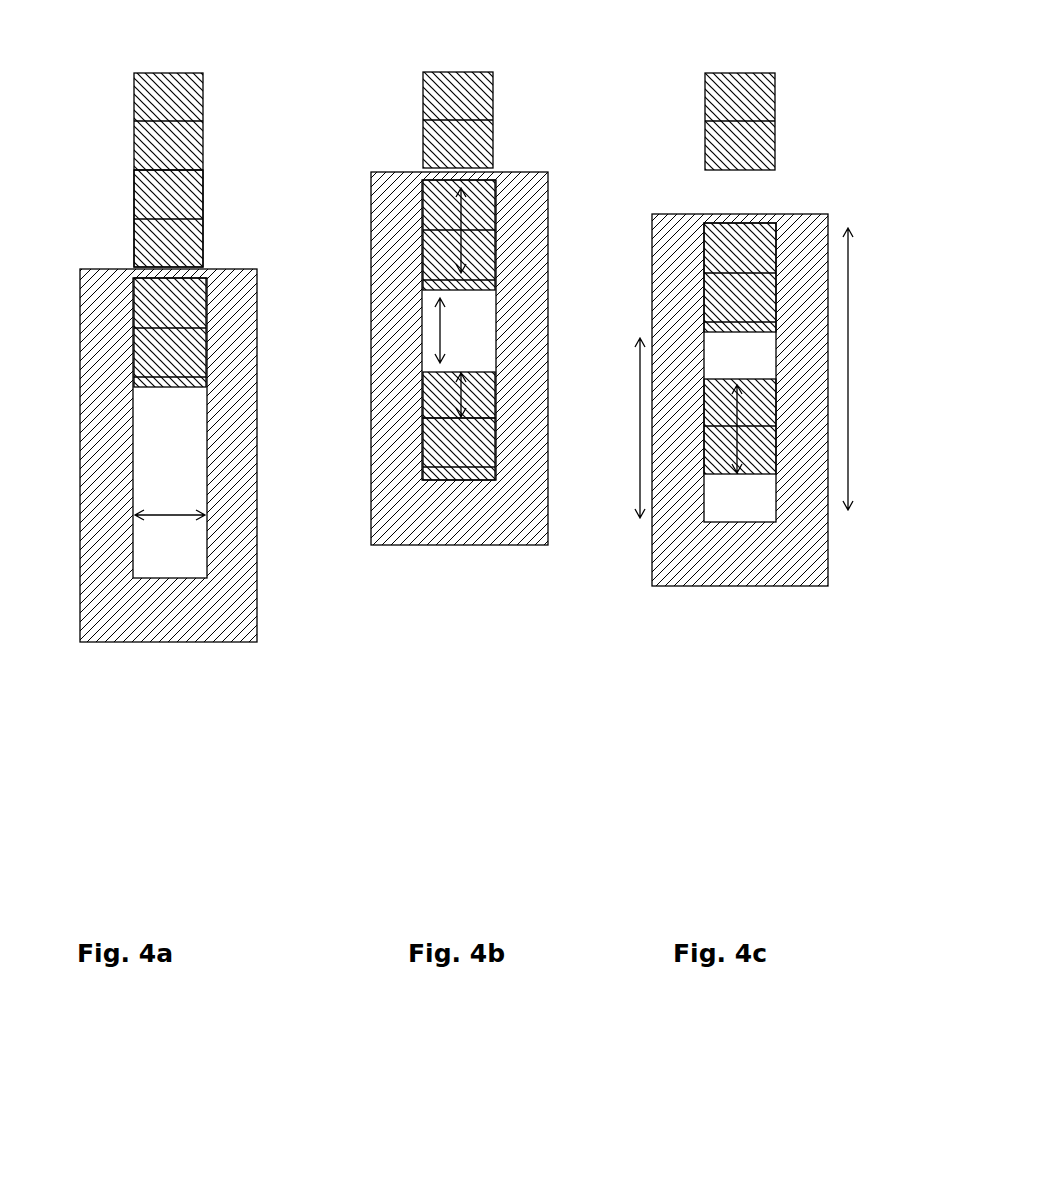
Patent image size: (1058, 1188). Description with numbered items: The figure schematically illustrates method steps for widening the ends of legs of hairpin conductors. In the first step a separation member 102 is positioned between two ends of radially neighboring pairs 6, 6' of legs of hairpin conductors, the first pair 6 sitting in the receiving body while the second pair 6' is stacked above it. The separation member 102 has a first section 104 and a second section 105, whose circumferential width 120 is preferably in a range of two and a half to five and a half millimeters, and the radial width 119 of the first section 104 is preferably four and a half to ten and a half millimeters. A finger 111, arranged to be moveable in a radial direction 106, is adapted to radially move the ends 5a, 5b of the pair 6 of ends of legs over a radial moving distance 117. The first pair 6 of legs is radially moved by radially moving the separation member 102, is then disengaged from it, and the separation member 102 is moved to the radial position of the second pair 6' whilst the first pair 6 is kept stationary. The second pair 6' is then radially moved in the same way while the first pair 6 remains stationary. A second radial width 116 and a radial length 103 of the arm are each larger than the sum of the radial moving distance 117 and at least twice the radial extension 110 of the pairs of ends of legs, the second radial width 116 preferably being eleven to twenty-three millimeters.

In FIG. 4A, the separation member 102 is at (138, 270).
In FIG. 4A, the first pair of legs of hairpin conductors 6 is at (112, 328).
In FIG. 4A, the second pair of legs of hairpin conductors 6' is at (204, 218).
In FIG. 4A, the second section 105 is at (182, 456).
In FIG. 4B, the second section 105 is at (391, 347).
In FIG. 4A, the circumferential width 120 is at (170, 515).
In FIG. 4A, the finger 111 is at (209, 663).
In FIG. 4B, the first section 104 is at (438, 207).
In FIG. 4B, the radial width of the first section 119 is at (461, 235).
In FIG. 4B, the radial moving distance 117 is at (440, 330).
In FIG. 4B, the end of leg 5a is at (438, 396).
In FIG. 4B, the end of leg 5b is at (462, 448).
In FIG. 4B, the radial direction 106 is at (461, 390).
In FIG. 4C, the second radial width 116 is at (640, 437).
In FIG. 4C, the radial length of the arm 103 is at (848, 363).
In FIG. 4C, the radial extension of the pairs of ends of legs 110 is at (737, 470).